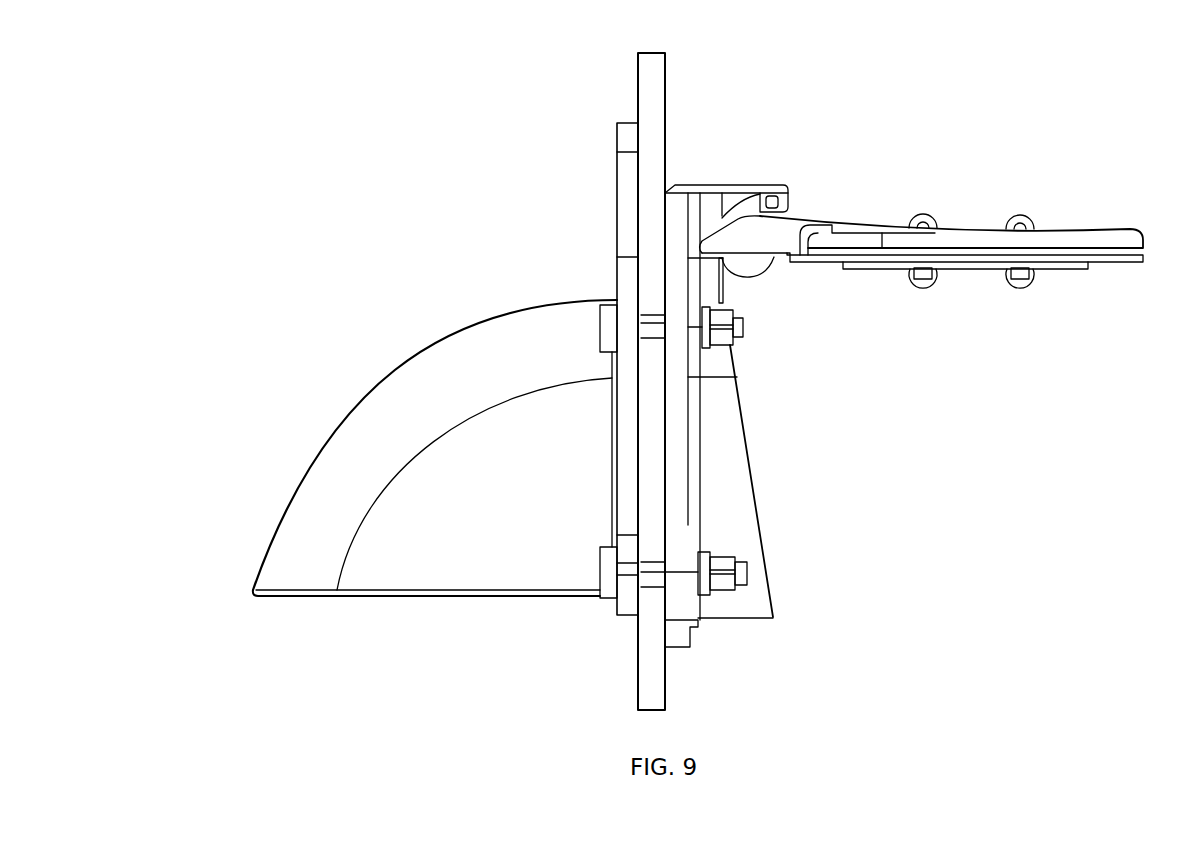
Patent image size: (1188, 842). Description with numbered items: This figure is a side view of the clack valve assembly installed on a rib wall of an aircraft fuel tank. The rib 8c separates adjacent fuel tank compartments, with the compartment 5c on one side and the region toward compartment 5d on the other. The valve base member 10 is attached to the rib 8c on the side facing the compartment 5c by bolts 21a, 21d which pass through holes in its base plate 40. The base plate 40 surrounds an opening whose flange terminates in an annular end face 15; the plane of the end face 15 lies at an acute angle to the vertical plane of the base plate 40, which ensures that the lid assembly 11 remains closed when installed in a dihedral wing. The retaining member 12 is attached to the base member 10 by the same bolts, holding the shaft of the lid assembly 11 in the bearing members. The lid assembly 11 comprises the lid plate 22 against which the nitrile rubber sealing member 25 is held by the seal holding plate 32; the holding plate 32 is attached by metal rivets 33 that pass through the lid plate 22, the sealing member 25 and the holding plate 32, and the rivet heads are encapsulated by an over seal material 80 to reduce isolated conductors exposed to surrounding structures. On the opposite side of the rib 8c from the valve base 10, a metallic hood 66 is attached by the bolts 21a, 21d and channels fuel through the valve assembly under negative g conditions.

The rib 8c is at (655, 83).
The retaining member 12 is at (745, 188).
The lid assembly 11 is at (979, 216).
The over seal material 80 is at (922, 215).
The lid plate 22 is at (1104, 230).
The sealing member 25 is at (1128, 259).
The seal holding plate 32 is at (1073, 270).
The metal rivets 33 is at (926, 280).
The bolt 21a is at (743, 330).
The bolt 21d is at (747, 571).
The annular end face 15 is at (755, 500).
The valve base member 10 is at (698, 641).
The base plate 40 is at (680, 648).
The cover 66 is at (400, 372).
The compartment 5d is at (185, 340).
The compartment 5c is at (1097, 488).